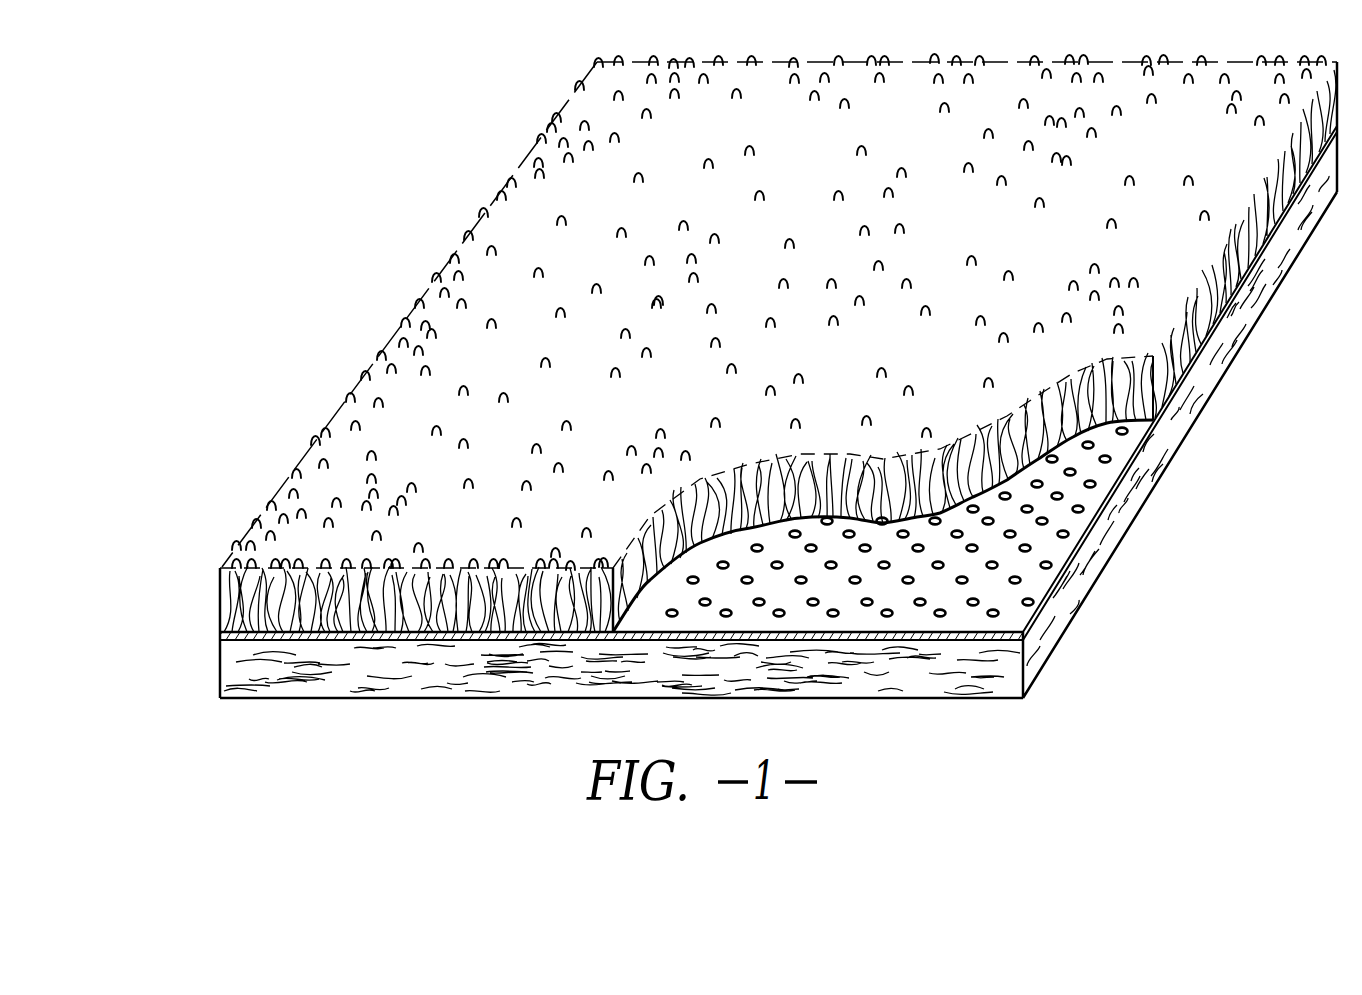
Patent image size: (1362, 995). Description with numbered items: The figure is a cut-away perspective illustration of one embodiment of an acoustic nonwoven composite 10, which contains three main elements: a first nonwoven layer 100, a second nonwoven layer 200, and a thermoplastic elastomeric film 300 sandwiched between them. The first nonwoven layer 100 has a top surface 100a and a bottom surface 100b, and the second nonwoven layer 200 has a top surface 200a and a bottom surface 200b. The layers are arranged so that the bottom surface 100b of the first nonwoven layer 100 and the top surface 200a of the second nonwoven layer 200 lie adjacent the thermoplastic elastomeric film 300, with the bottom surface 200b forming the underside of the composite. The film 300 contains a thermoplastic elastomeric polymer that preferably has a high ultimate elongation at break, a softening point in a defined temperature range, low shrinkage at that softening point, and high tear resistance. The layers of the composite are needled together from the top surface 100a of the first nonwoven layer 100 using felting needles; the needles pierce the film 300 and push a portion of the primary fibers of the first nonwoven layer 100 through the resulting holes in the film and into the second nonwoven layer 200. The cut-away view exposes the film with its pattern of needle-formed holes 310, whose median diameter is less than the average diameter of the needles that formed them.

The nonwoven composite 10 is at (336, 223).
The first nonwoven layer 100 is at (314, 580).
The top surface 100a is at (214, 569).
The bottom surface 100b is at (214, 631).
The thermoplastic elastomeric film 300 is at (213, 637).
The perforations of layer 300 310 is at (1025, 548).
The second nonwoven layer 200 is at (347, 668).
The top surface 200a is at (214, 643).
The bottom surface 200b is at (214, 698).